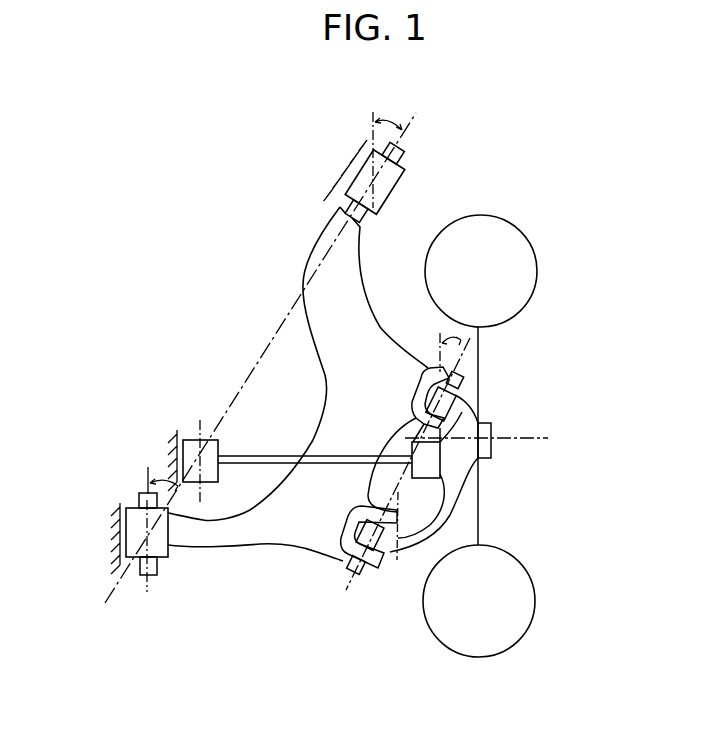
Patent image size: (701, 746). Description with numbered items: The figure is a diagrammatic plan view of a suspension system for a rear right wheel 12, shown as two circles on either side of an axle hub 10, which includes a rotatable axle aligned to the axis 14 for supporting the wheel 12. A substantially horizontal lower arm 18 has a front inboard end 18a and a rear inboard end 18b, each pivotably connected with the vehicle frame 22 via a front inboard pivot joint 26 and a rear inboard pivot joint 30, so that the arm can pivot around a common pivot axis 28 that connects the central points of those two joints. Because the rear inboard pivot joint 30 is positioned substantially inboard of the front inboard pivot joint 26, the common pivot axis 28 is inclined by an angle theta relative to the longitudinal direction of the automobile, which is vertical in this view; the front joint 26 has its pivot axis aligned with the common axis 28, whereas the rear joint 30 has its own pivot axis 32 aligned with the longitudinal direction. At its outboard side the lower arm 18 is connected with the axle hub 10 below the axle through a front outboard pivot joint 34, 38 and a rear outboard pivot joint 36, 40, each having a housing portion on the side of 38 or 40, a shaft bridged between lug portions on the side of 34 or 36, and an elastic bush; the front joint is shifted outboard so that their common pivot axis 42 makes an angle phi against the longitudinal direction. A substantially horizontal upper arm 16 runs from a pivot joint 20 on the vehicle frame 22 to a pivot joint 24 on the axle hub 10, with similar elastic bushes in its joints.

The axle hub 10 is at (466, 422).
The rear right wheel 12 is at (507, 217).
The axis 14 is at (521, 441).
The upper arm 16 is at (278, 454).
The lower arm 18 is at (298, 403).
The front inboard end 18a is at (322, 243).
The rear inboard end 18b is at (213, 545).
The pivot joint 20 is at (197, 438).
The vehicle frame 22 is at (345, 158).
The pivot joint 24 is at (443, 468).
The front inboard pivot joint 26 is at (405, 177).
The common pivot axis 28 is at (265, 352).
The rear inboard pivot joint 30 is at (163, 553).
The pivot axis 32 is at (150, 592).
The front outboard pivot joint 34 is at (465, 374).
The rear outboard pivot joint 36 is at (343, 563).
The front outboard pivot joint 38 is at (455, 402).
The rear outboard pivot joint 40 is at (378, 557).
The common pivot axis 42 is at (377, 544).